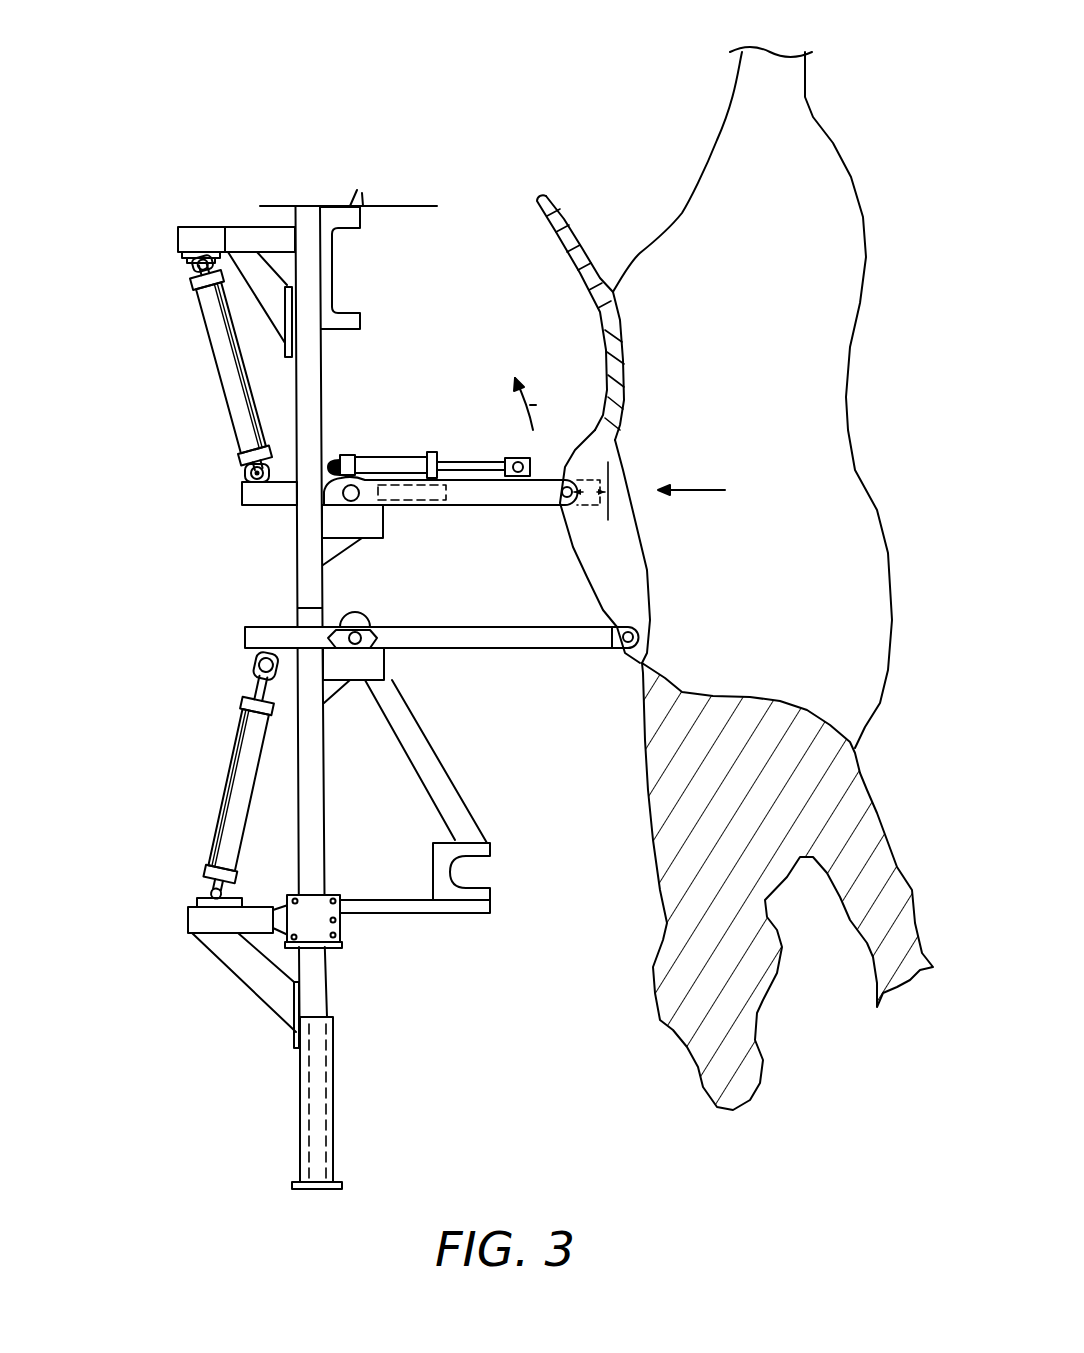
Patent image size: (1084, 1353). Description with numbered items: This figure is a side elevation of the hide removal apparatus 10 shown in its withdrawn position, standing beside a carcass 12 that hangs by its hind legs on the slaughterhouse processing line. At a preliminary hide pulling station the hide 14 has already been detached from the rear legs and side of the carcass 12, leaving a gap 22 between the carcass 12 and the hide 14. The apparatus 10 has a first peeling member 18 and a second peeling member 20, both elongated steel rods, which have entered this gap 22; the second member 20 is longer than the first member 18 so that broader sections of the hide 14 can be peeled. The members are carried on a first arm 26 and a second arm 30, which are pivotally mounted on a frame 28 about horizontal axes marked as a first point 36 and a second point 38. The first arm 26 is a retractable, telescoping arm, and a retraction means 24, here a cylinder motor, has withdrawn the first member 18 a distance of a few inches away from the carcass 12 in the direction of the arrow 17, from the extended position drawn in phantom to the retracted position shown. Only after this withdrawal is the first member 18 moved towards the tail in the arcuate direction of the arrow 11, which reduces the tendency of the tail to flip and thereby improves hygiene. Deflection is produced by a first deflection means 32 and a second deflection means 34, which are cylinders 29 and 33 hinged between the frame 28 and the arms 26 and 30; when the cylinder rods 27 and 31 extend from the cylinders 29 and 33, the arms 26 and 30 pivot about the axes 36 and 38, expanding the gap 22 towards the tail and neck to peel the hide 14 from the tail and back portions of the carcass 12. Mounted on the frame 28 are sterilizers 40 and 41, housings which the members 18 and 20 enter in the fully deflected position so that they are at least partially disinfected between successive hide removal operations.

The apparatus 10 is at (168, 592).
The arrow indicating arcuate direction 11 is at (539, 404).
The carcass 12 is at (718, 170).
The hide 14 is at (596, 432).
The arrow indicating direction 17 is at (685, 490).
The first peeling member 18 is at (565, 505).
The second peeling member 20 is at (628, 650).
The gap 22 is at (593, 572).
The retraction means 24 is at (431, 452).
The first arm 26 is at (497, 505).
The cylinder rod 27 is at (247, 460).
The frame 28 is at (324, 820).
The cylinder 29 is at (230, 398).
The second arm 30 is at (535, 650).
The cylinder rod 31 is at (255, 683).
The first deflection means 32 is at (183, 356).
The cylinder 33 is at (233, 812).
The second deflection means 34 is at (173, 870).
The first point 36 is at (365, 456).
The second point 38 is at (364, 622).
The sterilizer 40 is at (362, 322).
The sterilizer 41 is at (492, 893).